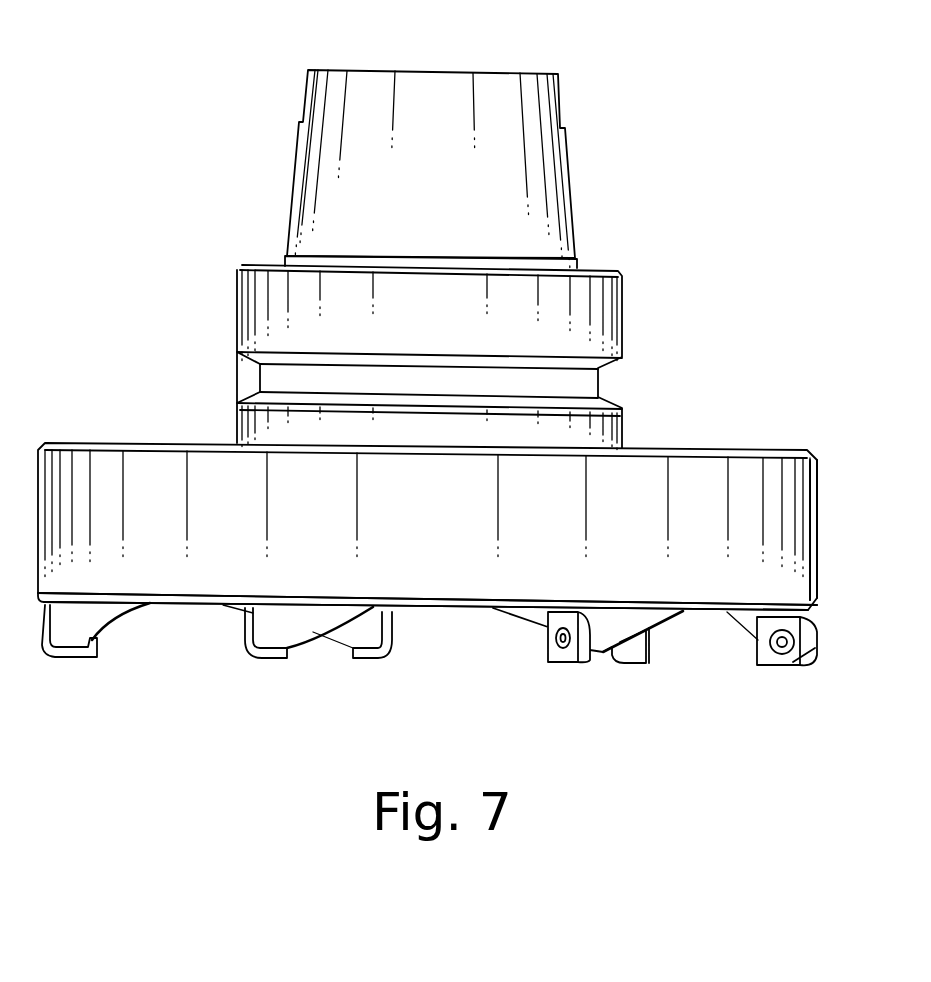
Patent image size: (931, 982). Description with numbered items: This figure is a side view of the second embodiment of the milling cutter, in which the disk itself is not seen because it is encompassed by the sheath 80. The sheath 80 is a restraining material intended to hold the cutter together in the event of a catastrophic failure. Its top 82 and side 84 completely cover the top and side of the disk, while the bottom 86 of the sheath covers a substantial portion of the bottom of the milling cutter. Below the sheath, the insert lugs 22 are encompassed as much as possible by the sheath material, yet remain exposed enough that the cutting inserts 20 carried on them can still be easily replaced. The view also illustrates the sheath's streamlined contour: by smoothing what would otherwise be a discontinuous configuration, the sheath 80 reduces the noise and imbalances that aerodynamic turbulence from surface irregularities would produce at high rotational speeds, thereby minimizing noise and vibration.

The sheath 80 is at (463, 526).
The top of the sheath 82 is at (658, 447).
The side of the sheath 84 is at (817, 498).
The bottom of the sheath 86 is at (445, 608).
The insert lug 22 is at (743, 622).
The cutting insert 20 is at (778, 667).